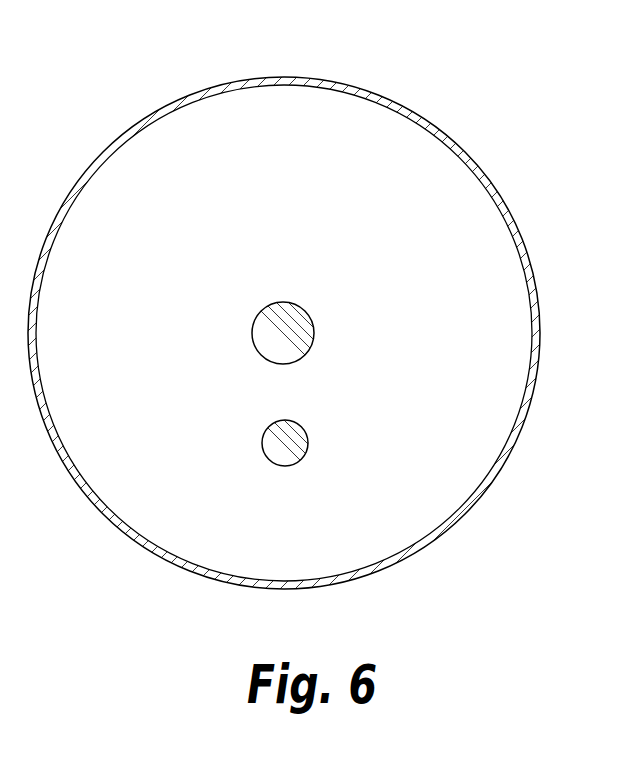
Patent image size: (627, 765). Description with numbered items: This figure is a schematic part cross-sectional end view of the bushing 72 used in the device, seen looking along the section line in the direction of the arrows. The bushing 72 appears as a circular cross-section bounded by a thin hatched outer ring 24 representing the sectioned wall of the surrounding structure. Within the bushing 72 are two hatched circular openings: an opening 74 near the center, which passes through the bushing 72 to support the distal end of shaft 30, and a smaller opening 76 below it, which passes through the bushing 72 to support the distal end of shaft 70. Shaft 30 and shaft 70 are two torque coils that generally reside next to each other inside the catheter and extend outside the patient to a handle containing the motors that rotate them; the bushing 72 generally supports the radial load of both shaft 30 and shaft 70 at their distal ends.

The tubular housing wall 24 is at (393, 100).
The shaft 30 is at (278, 320).
The shaft 70 is at (272, 453).
The bushing 72 is at (503, 534).
The opening 74 is at (318, 330).
The opening 76 is at (288, 468).